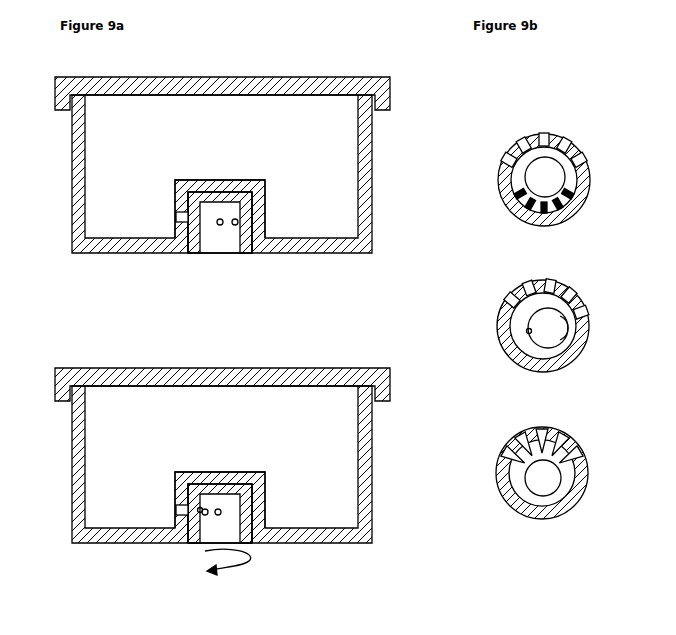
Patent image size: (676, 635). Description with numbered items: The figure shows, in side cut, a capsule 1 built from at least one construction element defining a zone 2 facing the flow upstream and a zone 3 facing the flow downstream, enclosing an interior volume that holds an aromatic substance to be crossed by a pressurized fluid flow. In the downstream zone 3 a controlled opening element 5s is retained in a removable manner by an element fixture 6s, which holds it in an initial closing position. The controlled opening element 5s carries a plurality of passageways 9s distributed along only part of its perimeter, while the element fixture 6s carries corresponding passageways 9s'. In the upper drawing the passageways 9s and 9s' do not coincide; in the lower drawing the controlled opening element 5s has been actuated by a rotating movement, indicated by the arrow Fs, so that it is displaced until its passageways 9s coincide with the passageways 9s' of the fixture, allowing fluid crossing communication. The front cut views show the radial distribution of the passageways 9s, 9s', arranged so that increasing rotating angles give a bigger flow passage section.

In FIG. 9a, the capsule 1 is at (205, 322).
In FIG. 9a, the zone of capsule facing the flow upstream 2 is at (222, 233).
In FIG. 9a, the zone of capsule facing the flow downstream 3 is at (222, 319).
In FIG. 9a, the controlled opening element 5s is at (216, 376).
In FIG. 9b, the controlled opening element 5s is at (545, 326).
In FIG. 9a, the element fixture 6s is at (220, 356).
In FIG. 9b, the element fixture 6s is at (566, 205).
In FIG. 9a, the passageways of the element fixture 9s' is at (168, 362).
In FIG. 9b, the passageways of the element fixture 9s' is at (532, 300).
In FIG. 9a, the passageways of the controlled opening element 9s is at (216, 520).
In FIG. 9b, the passageways of the controlled opening element 9s is at (548, 328).
In FIG. 9a, the force arrow Fs is at (228, 567).